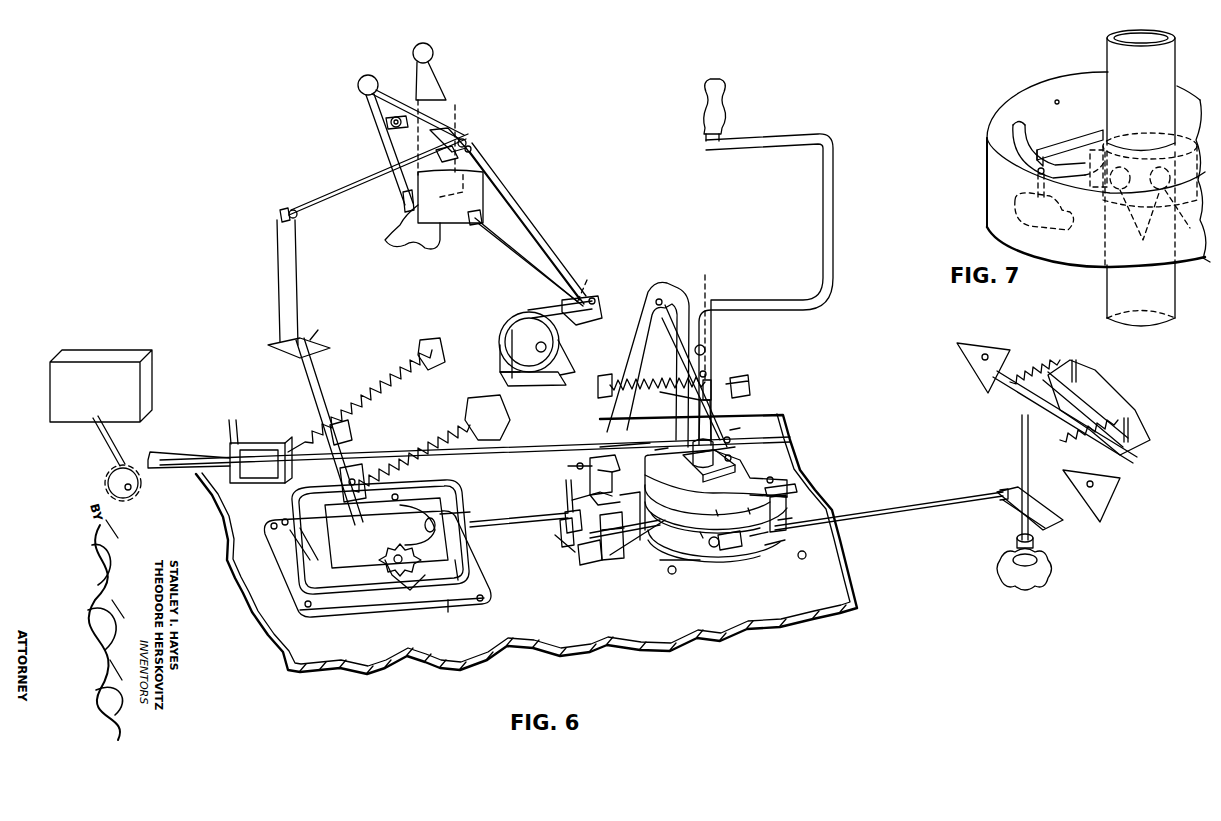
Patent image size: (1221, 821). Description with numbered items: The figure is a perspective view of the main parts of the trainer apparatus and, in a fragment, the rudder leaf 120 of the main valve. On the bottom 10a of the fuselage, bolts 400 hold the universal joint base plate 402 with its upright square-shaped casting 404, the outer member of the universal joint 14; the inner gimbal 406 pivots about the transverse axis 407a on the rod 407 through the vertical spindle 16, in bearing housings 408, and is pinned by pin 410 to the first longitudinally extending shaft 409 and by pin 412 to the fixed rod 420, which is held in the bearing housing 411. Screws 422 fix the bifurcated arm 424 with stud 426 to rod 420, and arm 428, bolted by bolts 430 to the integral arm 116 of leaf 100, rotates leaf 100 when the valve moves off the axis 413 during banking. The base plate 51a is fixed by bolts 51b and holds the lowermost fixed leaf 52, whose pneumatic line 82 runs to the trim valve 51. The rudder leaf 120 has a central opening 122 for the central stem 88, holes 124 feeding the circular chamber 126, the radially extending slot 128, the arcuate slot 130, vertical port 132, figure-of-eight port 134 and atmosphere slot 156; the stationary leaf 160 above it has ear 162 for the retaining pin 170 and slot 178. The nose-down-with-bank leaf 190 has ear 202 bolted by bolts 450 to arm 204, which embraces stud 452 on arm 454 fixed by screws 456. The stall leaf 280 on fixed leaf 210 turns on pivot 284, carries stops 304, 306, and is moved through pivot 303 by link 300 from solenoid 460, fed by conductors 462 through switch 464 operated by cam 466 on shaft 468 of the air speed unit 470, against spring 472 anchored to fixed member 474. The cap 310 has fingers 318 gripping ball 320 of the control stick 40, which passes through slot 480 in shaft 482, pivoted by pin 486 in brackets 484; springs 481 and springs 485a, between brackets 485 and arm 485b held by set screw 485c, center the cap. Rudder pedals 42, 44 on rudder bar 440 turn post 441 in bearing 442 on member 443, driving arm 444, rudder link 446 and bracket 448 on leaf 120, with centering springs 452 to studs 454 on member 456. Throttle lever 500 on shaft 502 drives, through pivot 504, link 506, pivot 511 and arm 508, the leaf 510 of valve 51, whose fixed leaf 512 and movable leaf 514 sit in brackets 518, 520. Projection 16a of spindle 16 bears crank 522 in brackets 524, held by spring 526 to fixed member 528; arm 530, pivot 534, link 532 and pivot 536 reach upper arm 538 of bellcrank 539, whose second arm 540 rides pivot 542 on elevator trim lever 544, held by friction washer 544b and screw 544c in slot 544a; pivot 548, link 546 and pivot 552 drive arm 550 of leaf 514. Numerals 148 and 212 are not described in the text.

In FIG. 6, the bottom of the fuselage 10a is at (605, 652).
In FIG. 6, the universal joint 14 is at (327, 636).
In FIG. 6, the vertical spindle 16 is at (408, 562).
In FIG. 6, the upwardly extending projection 16a is at (353, 470).
In FIG. 6, the control stick 40 is at (836, 181).
In FIG. 6, the left rudder pedal 42 is at (970, 350).
In FIG. 6, the right rudder pedal 44 is at (1100, 502).
In FIG. 6, the trim valve 51 is at (447, 331).
In FIG. 6, the base plate 51a is at (680, 545).
In FIG. 6, the bolts 51b is at (700, 545).
In FIG. 6, the lowermost fixed leaf 52 is at (688, 575).
In FIG. 6, the pneumatic line 82 is at (548, 347).
In FIG. 7, the central stem 88 is at (1160, 60).
In FIG. 6, the bank leaf 100 is at (705, 565).
In FIG. 6, the integral arm 116 is at (662, 528).
In FIG. 6, the rudder leaf 120 is at (712, 560).
In FIG. 7, the rudder leaf 120 is at (1090, 253).
In FIG. 7, the central opening 122 is at (1141, 83).
In FIG. 7, the holes 124 is at (1155, 225).
In FIG. 7, the circular chamber 126 is at (1116, 190).
In FIG. 7, the radially extending slot 128 is at (1057, 148).
In FIG. 7, the arcuate slot 130 is at (1020, 136).
In FIG. 7, the vertical port 132 is at (1036, 184).
In FIG. 7, the figure-of-eight port 134 is at (1013, 212).
In FIG. 6, the disc band 148 is at (685, 529).
In FIG. 6, the atmosphere slot 156 is at (733, 505).
In FIG. 6, the stationary leaf 160 is at (750, 545).
In FIG. 6, the integral ear 162 is at (870, 514).
In FIG. 6, the retaining pin 170 is at (788, 514).
In FIG. 6, the slot 178 is at (701, 507).
In FIG. 6, the nose-down-with-bank leaf 190 is at (772, 548).
In FIG. 6, the integral ear 202 is at (615, 542).
In FIG. 6, the arm 204 is at (600, 480).
In FIG. 6, the fixed leaf 210 is at (790, 548).
In FIG. 6, the arm 212 is at (795, 490).
In FIG. 6, the stall leaf 280 is at (773, 478).
In FIG. 6, the pivot 284 is at (728, 450).
In FIG. 6, the link 300 is at (585, 448).
In FIG. 6, the pivot 303 is at (660, 450).
In FIG. 6, the stop 304 is at (640, 450).
In FIG. 6, the stop 306 is at (735, 430).
In FIG. 6, the cap 310 is at (731, 457).
In FIG. 6, the fingers 318 is at (730, 438).
In FIG. 6, the ball 320 is at (716, 430).
In FIG. 6, the bolts 400 is at (265, 525).
In FIG. 6, the universal joint base plate 402 is at (447, 605).
In FIG. 6, the upright square-shaped casting 404 is at (458, 578).
In FIG. 6, the inner gimbal 406 is at (348, 548).
In FIG. 6, the rod 407 is at (420, 500).
In FIG. 6, the transverse axis 407a is at (410, 590).
In FIG. 6, the bearing housings 408 is at (396, 495).
In FIG. 6, the first longitudinally extending shaft 409 is at (298, 538).
In FIG. 6, the pin 410 is at (305, 548).
In FIG. 6, the bearing housing 411 is at (445, 517).
In FIG. 6, the pin 412 is at (436, 520).
In FIG. 6, the axis 413 is at (284, 518).
In FIG. 6, the fixed rod 420 is at (520, 519).
In FIG. 6, the screws 422 is at (567, 522).
In FIG. 6, the bifurcated arm 424 is at (560, 540).
In FIG. 6, the stud 426 is at (582, 550).
In FIG. 6, the arm 428 is at (610, 528).
In FIG. 6, the bolts 430 is at (640, 528).
In FIG. 6, the rudder bar 440 is at (1020, 408).
In FIG. 6, the vertical post 441 is at (1020, 441).
In FIG. 6, the fixed bearing 442 is at (1034, 548).
In FIG. 6, the member 443 is at (1045, 572).
In FIG. 6, the arm 444 is at (1065, 522).
In FIG. 6, the rudder link 446 is at (947, 503).
In FIG. 6, the bracket 448 is at (724, 552).
In FIG. 6, the bolts 450 is at (600, 495).
In FIG. 6, the centering springs / stud 452 is at (572, 466).
In FIG. 6, the studs / arm 454 is at (565, 490).
In FIG. 6, the member / screws 456 is at (568, 536).
In FIG. 6, the solenoid 460 is at (240, 445).
In FIG. 6, the conductors 462 is at (229, 420).
In FIG. 6, the switch 464 is at (166, 462).
In FIG. 6, the cam 466 is at (115, 475).
In FIG. 6, the shaft 468 is at (105, 440).
In FIG. 6, the air speed unit 470 is at (130, 372).
In FIG. 6, the spring 472 is at (395, 376).
In FIG. 6, the fixed member 474 is at (438, 357).
In FIG. 6, the slot 480 is at (704, 347).
In FIG. 6, the springs 481 is at (690, 446).
In FIG. 6, the shaft 482 is at (670, 317).
In FIG. 6, the brackets 484 is at (657, 298).
In FIG. 6, the fixed smaller brackets 485 is at (605, 383).
In FIG. 6, the springs 485a is at (655, 393).
In FIG. 6, the arm 485b is at (662, 345).
In FIG. 6, the set screw 485c is at (664, 296).
In FIG. 6, the pin 486 is at (706, 373).
In FIG. 6, the simulated throttle control lever 500 is at (440, 78).
In FIG. 6, the transversely extending shaft 502 is at (404, 205).
In FIG. 6, the pivot 504 is at (472, 225).
In FIG. 6, the link 506 is at (543, 270).
In FIG. 6, the arm 508 is at (580, 303).
In FIG. 6, the valve leaf 510 is at (522, 313).
In FIG. 6, the pivot 511 is at (597, 276).
In FIG. 6, the outside fixed leaf 512 is at (511, 323).
In FIG. 6, the inner movable leaf 514 is at (512, 343).
In FIG. 6, the bracket 518 is at (515, 375).
In FIG. 6, the bracket 520 is at (540, 364).
In FIG. 6, the crank 522 is at (320, 386).
In FIG. 6, the brackets 524 is at (280, 350).
In FIG. 6, the spring 526 is at (443, 432).
In FIG. 6, the fixed member 528 is at (476, 410).
In FIG. 6, the arm 530 is at (288, 258).
In FIG. 6, the link 532 is at (340, 190).
In FIG. 6, the pivot 534 is at (285, 215).
In FIG. 6, the pivot 536 is at (448, 128).
In FIG. 6, the upper arm 538 is at (466, 140).
In FIG. 6, the bellcrank 539 is at (535, 100).
In FIG. 6, the second arm 540 is at (478, 153).
In FIG. 6, the pivot 542 is at (438, 153).
In FIG. 6, the simulated elevator trim lever 544 is at (396, 136).
In FIG. 6, the slot 544a is at (390, 124).
In FIG. 6, the friction washer 544b is at (392, 116).
In FIG. 6, the screw 544c is at (410, 78).
In FIG. 6, the link 546 is at (525, 220).
In FIG. 6, the pivot 548 is at (472, 150).
In FIG. 6, the arm 550 is at (572, 317).
In FIG. 6, the pivot 552 is at (594, 298).